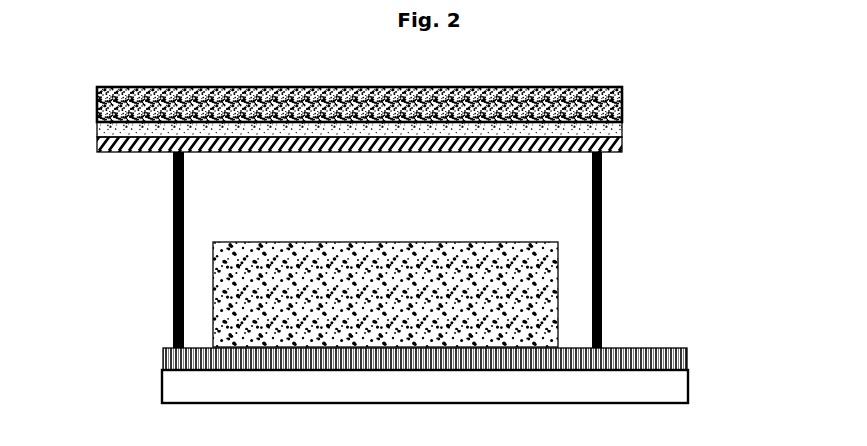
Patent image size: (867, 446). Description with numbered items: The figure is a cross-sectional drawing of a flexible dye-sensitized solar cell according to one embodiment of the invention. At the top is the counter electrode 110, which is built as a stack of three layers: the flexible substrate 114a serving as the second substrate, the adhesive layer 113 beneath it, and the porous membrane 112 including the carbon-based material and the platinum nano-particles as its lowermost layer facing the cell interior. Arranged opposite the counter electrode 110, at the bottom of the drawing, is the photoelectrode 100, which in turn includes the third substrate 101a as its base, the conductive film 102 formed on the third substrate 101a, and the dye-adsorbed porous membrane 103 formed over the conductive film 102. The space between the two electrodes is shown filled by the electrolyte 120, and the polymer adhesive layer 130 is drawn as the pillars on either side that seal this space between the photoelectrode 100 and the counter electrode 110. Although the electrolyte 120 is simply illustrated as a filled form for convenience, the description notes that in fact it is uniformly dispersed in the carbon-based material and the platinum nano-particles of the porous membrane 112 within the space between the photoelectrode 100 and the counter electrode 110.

The counter electrode 110 is at (473, 124).
The flexible substrate 114a is at (622, 90).
The adhesive layer 113 is at (608, 129).
The porous membrane including carbon-based material and platinum nano-particles 112 is at (622, 148).
The electrolyte 120 is at (557, 202).
The polymer adhesive layer 130 is at (172, 254).
The photoelectrode 100 is at (503, 317).
The dye-adsorbed porous membrane 103 is at (558, 250).
The conductive film 102 is at (572, 348).
The third substrate 101a is at (628, 387).